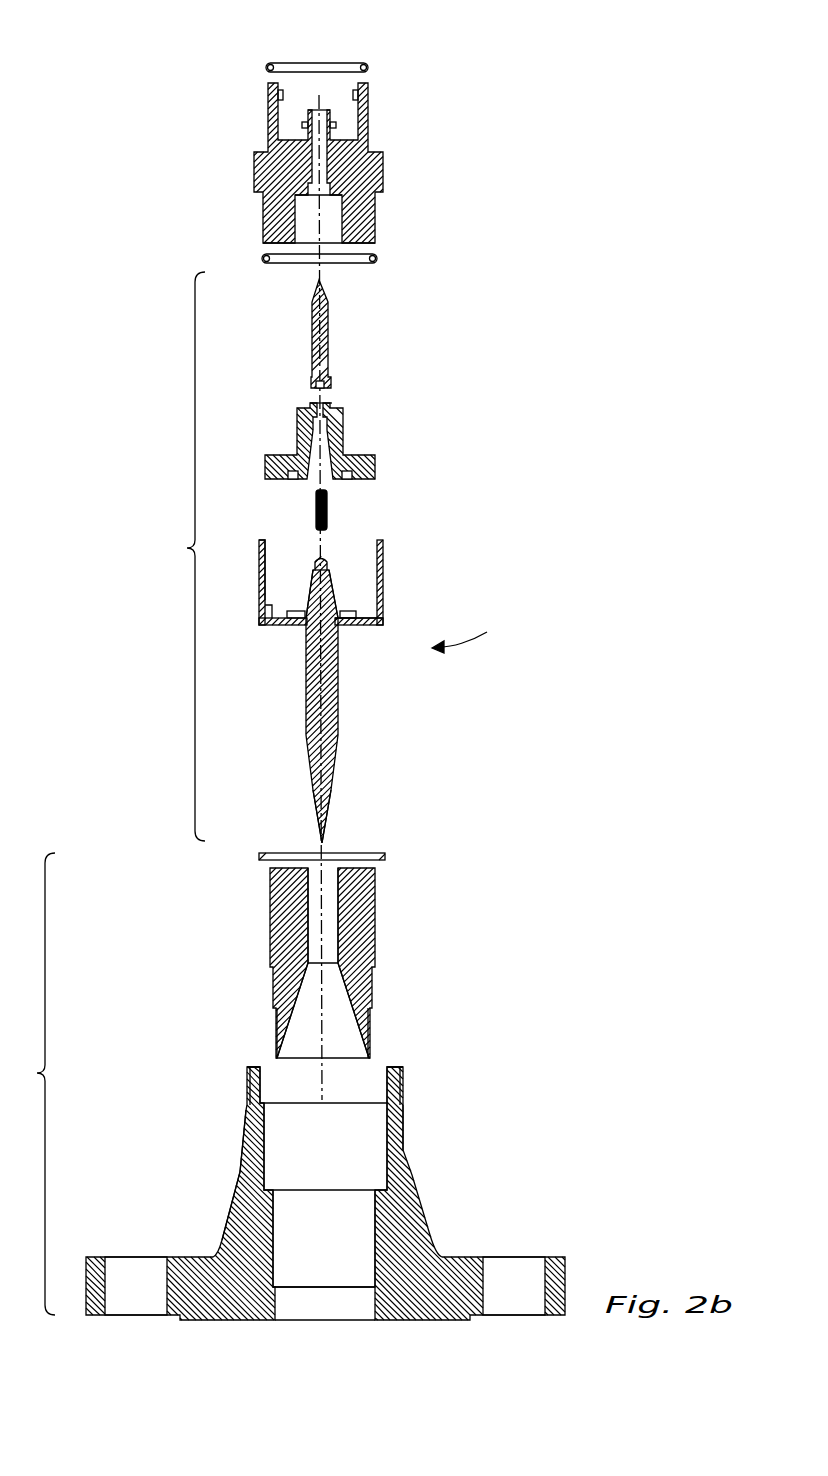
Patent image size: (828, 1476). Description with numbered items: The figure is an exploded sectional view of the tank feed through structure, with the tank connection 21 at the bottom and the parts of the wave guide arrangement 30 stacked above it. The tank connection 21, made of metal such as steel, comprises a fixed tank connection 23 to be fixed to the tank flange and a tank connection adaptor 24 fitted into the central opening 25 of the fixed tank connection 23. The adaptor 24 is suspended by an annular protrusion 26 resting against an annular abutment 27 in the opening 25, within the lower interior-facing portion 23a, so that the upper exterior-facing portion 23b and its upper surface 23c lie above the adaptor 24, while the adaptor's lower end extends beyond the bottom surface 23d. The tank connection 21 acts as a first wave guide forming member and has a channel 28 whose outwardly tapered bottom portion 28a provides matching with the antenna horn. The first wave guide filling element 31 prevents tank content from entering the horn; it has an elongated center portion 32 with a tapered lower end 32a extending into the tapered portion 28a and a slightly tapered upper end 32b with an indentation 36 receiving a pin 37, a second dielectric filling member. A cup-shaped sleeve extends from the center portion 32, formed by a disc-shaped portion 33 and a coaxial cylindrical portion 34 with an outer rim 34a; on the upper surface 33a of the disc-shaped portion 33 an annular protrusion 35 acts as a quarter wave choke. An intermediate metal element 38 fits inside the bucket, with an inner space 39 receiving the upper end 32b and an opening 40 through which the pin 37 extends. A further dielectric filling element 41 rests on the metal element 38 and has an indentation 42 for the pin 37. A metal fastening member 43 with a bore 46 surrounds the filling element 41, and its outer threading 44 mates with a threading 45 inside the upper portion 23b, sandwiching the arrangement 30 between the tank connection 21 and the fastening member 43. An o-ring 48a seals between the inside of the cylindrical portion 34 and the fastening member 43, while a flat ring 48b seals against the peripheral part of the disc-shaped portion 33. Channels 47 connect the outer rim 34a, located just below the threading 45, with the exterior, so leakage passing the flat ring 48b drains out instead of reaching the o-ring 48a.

The tank connection 21 is at (31, 1084).
The fixed tank connection 23 is at (227, 1217).
The lower (interior facing) portion of the fixed tank connection 23a is at (373, 1305).
The upper (exterior facing) portion of the tank connection 23b is at (398, 1128).
The upper surface of the tank connection 23c is at (405, 1072).
The bottom surface of the tank connection 23d is at (412, 1320).
The tank connection adaptor 24 is at (376, 897).
The central opening 25 is at (355, 1092).
The annular protrusion 26 is at (283, 1015).
The annular abutment 27 is at (265, 1178).
The channel 28 is at (317, 876).
The bottom portion of the channel 28a is at (340, 1013).
The wave guide arrangement 30 is at (175, 556).
The first wave guide filling element 31 is at (473, 629).
The center portion 32 is at (333, 707).
The tapered lower end 32a is at (333, 790).
The upper end of the center portion 32b is at (383, 546).
The disc-shaped portion 33 is at (362, 628).
The upper surface of the disc-shaped portion 33a is at (272, 612).
The cylindrical portion 34 is at (383, 598).
The outer rim 34a is at (258, 541).
The annular protrusion 35 is at (383, 583).
The indentation 36 is at (325, 563).
The pin 37 is at (328, 510).
The intermediate metal element 38 is at (347, 437).
The inner space 39 is at (313, 472).
The opening 40 is at (325, 406).
The further wave guide dielectric filling element 41 is at (330, 337).
The indentation 42 is at (318, 393).
The metal fastening member 43 is at (368, 231).
The outer threading 44 is at (385, 170).
The threading 45 is at (272, 1085).
The bore 46 is at (323, 118).
The channels 47 is at (264, 1112).
The o-ring 48a is at (358, 252).
The flat ring 48b is at (365, 853).